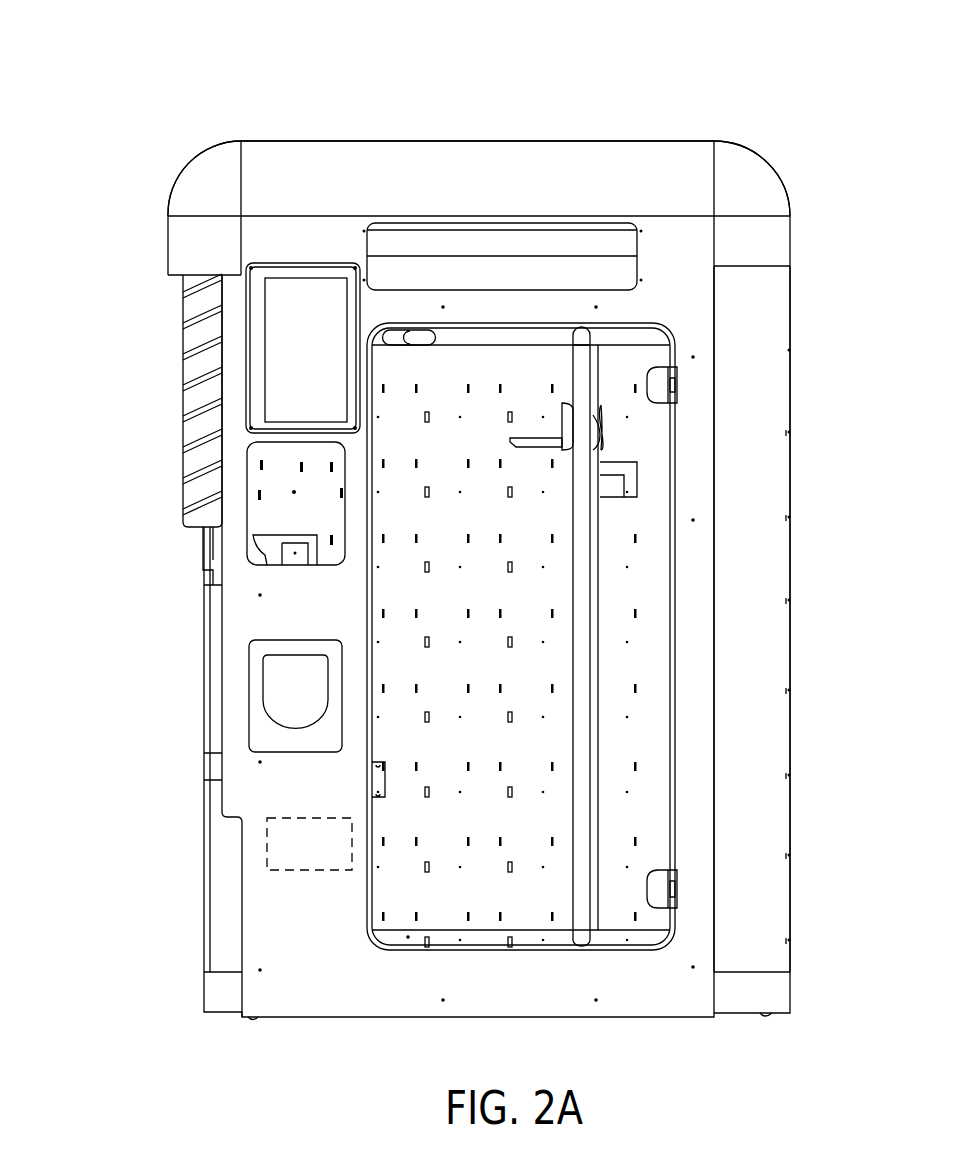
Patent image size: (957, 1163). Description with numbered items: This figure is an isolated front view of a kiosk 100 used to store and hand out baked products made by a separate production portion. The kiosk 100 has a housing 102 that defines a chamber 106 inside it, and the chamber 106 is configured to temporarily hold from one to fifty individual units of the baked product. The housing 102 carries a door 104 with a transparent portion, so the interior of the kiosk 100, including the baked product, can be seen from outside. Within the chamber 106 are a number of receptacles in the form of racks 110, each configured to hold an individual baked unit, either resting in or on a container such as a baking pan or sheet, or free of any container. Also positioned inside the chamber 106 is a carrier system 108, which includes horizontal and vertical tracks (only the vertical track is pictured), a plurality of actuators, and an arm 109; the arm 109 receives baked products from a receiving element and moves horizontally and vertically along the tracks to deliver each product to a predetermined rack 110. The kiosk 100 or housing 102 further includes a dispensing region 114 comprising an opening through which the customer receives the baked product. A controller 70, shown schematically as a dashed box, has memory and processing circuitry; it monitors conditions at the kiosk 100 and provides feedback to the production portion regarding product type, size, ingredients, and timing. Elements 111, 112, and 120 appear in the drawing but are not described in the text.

The kiosk 100 is at (113, 95).
The housing 102 is at (205, 205).
The door 104 is at (762, 533).
The chamber 106 is at (610, 780).
The carrier system 108 is at (625, 413).
The arm 109 is at (541, 452).
The rack 110 is at (627, 472).
The rail 111 is at (600, 380).
The display 112 is at (288, 349).
The dispensing region 114 is at (280, 474).
The marquee 120 is at (697, 231).
The controller 70 is at (325, 859).